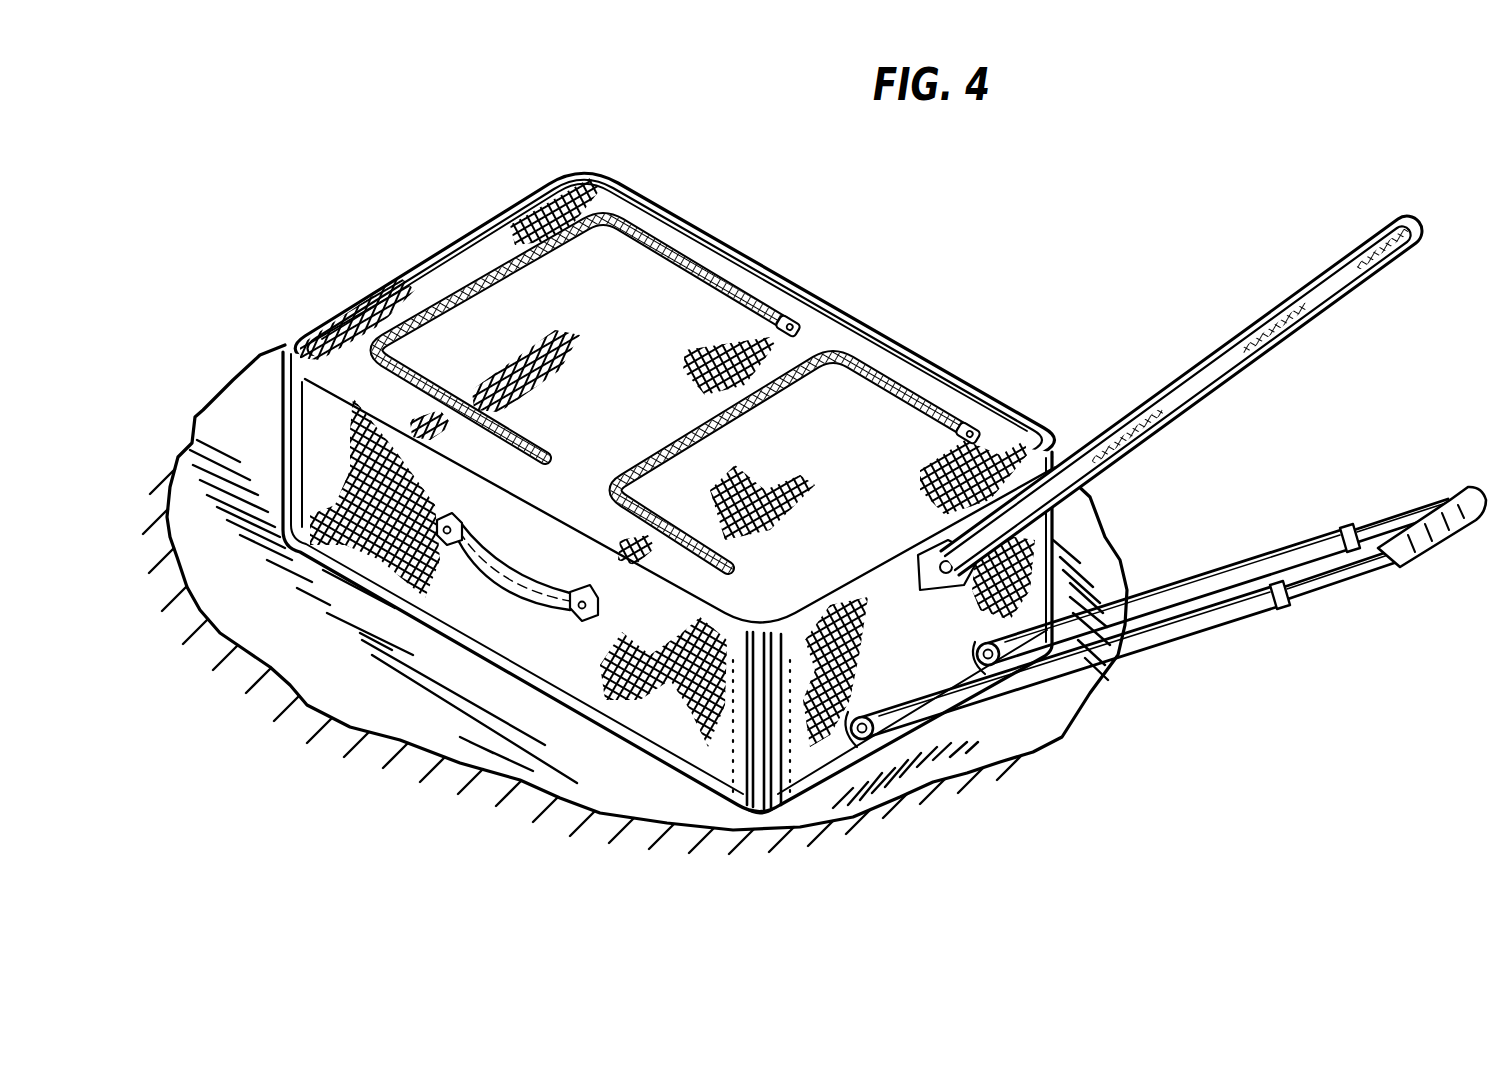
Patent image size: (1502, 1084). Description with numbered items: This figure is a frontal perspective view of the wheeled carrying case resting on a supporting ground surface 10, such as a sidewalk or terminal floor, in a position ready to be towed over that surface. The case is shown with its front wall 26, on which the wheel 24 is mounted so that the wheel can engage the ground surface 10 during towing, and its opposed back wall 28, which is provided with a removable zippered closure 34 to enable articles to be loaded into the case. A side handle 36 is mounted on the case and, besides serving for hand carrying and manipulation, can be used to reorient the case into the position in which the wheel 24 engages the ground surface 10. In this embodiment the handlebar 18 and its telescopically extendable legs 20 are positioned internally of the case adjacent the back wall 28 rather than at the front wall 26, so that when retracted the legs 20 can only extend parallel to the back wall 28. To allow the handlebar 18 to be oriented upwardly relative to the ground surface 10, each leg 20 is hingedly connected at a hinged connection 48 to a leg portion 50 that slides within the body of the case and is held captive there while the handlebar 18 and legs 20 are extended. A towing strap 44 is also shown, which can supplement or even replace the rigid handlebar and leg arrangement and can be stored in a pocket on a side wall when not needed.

The ground surface 10 is at (1055, 722).
The handlebar 18 is at (1462, 528).
The telescopic legs 20 is at (1383, 522).
The wheel 24 is at (720, 800).
The front wall 26 is at (806, 344).
The back wall 28 is at (448, 646).
The zippered closure 34 is at (623, 346).
The side handle 36 is at (528, 594).
The towing strap 44 is at (1257, 318).
The hinged connection 48 is at (983, 638).
The leg portions 50 is at (978, 660).